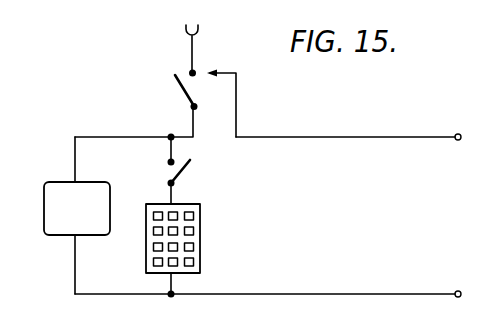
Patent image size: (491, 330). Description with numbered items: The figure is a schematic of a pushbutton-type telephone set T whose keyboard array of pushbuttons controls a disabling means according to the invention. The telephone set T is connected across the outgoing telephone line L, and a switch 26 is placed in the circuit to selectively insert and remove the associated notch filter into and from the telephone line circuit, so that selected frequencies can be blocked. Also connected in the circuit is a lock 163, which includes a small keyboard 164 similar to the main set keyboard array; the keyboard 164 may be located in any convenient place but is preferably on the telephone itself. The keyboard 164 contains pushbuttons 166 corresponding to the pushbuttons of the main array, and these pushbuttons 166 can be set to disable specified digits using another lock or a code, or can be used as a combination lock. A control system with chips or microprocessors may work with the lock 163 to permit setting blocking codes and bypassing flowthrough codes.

The telephone set T is at (49, 174).
The switch 26 is at (157, 174).
The lock 163 is at (208, 224).
The keyboard 164 is at (207, 217).
The pushbuttons 166 is at (191, 263).
The outgoing telephone line L is at (300, 301).